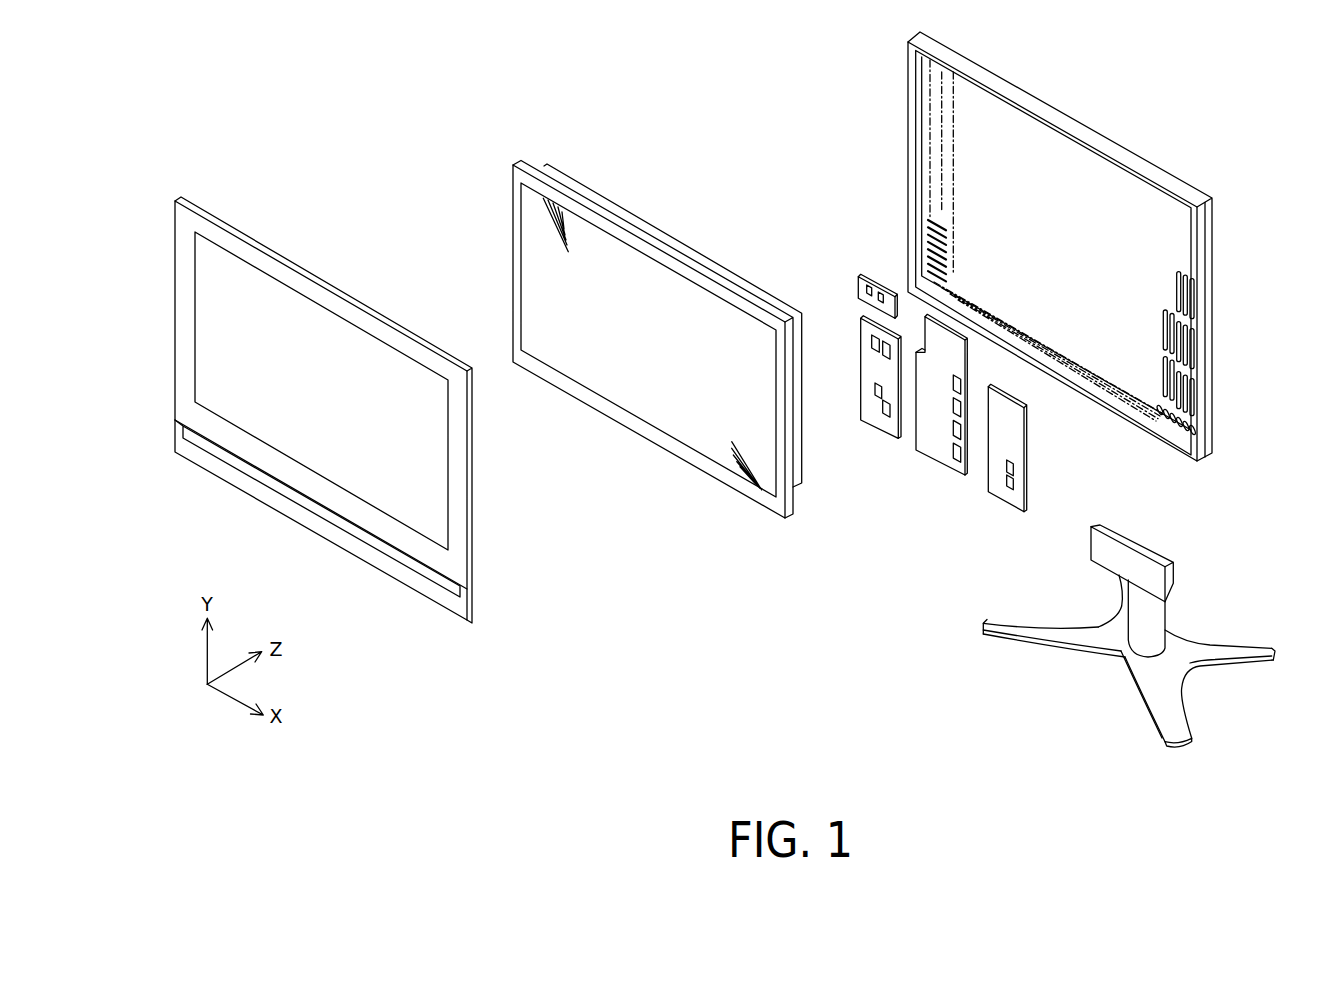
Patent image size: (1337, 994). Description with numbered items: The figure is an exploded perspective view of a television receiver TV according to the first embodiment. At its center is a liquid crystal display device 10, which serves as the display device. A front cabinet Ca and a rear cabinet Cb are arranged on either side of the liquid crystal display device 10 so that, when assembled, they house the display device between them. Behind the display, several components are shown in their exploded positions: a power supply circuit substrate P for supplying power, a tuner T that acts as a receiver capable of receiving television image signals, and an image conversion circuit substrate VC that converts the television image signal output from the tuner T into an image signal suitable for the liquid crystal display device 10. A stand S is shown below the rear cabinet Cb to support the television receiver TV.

The television receiver TV is at (680, 96).
The front cabinet Ca is at (306, 273).
The liquid crystal display device 10 is at (607, 201).
The rear cabinet Cb is at (1052, 107).
The tuner T is at (875, 428).
The power supply circuit substrate P is at (933, 462).
The image conversion circuit substrate VC is at (1005, 501).
The stand S is at (1048, 645).